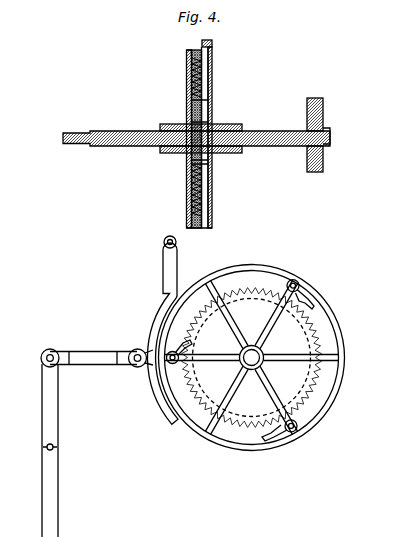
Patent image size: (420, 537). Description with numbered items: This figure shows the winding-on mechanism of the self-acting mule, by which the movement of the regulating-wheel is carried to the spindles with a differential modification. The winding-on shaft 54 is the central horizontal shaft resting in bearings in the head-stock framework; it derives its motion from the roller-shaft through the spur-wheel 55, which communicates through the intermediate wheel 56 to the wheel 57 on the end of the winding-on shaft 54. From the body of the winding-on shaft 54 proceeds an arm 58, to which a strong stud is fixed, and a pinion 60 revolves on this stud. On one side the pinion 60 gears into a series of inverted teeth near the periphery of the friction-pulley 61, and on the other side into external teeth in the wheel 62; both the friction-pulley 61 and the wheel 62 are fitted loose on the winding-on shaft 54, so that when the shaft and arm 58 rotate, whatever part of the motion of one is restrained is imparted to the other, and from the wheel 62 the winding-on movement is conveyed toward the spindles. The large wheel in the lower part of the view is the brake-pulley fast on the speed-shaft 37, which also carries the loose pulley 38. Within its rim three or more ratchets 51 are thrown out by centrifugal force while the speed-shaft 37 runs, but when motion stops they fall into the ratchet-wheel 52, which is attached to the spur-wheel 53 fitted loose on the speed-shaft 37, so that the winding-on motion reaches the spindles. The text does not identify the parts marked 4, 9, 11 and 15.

The wheel 4 is at (250, 264).
The connecting rod 9 is at (50, 450).
The ratchet wheel 11 is at (269, 377).
The brake band lever 15 is at (159, 330).
The speed-shaft 37 is at (252, 358).
The loose pulley 38 is at (97, 358).
The ratchets 51 is at (279, 430).
The ratchet-wheel 52 is at (183, 360).
The spur-wheel 53 is at (300, 296).
The winding-on shaft 54 is at (196, 132).
The spur-wheel 55 is at (208, 98).
The intermediate wheel 56 is at (187, 118).
The wheel 57 is at (318, 130).
The arm 58 is at (207, 125).
The pinion 60 is at (207, 137).
The friction-pulley 61 is at (197, 138).
The wheel 62 is at (208, 134).